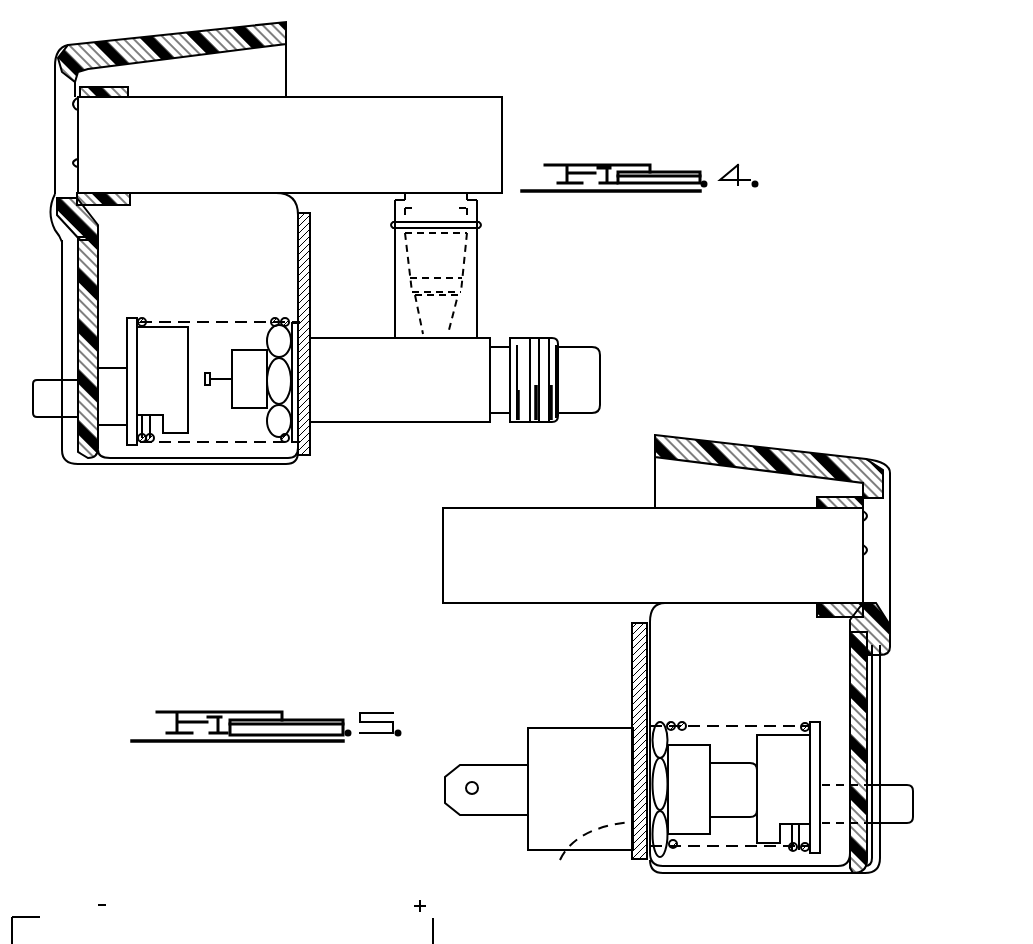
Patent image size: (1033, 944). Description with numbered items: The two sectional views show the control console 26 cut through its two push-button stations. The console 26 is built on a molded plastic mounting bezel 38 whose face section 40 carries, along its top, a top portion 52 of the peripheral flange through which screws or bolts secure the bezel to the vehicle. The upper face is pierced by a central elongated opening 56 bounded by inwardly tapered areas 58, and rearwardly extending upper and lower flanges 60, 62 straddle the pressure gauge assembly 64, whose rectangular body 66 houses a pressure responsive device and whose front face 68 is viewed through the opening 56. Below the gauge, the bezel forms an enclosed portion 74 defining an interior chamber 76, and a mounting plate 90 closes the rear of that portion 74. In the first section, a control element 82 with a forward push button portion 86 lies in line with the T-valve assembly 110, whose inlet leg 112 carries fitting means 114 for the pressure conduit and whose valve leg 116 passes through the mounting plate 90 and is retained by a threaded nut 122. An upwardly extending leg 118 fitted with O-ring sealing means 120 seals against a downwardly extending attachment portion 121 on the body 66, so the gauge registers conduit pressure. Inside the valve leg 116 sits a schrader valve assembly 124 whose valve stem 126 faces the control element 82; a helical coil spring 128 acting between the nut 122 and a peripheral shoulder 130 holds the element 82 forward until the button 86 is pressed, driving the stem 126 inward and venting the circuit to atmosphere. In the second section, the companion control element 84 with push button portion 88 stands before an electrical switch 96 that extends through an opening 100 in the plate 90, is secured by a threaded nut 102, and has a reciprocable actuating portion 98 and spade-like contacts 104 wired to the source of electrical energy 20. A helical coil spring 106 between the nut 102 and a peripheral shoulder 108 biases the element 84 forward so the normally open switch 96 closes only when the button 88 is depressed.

In FIG. 5, the source of electrical energy 20 is at (438, 932).
In FIG. 4, the control console 26 is at (402, 72).
In FIG. 5, the control console 26 is at (780, 434).
In FIG. 4, the mounting bezel 38 is at (70, 44).
In FIG. 5, the mounting bezel 38 is at (890, 462).
In FIG. 4, the face section 40 is at (76, 300).
In FIG. 5, the face section 40 is at (862, 684).
In FIG. 4, the top portion 52 is at (236, 48).
In FIG. 5, the top portion 52 is at (694, 436).
In FIG. 4, the central elongated opening 56 is at (82, 112).
In FIG. 5, the central elongated opening 56 is at (864, 517).
In FIG. 4, the inwardly tapered areas 58 is at (58, 210).
In FIG. 5, the inwardly tapered areas 58 is at (878, 617).
In FIG. 4, the upper flange 60 is at (122, 88).
In FIG. 5, the upper flange 60 is at (830, 500).
In FIG. 4, the lower flange 62 is at (130, 205).
In FIG. 5, the lower flange 62 is at (818, 612).
In FIG. 4, the pressure gauge assembly 64 is at (250, 198).
In FIG. 5, the pressure gauge assembly 64 is at (555, 506).
In FIG. 5, the body 66 is at (552, 605).
In FIG. 4, the front face 68 is at (80, 165).
In FIG. 5, the front face 68 is at (866, 553).
In FIG. 4, the enclosed portion 74 is at (218, 455).
In FIG. 4, the interior chamber 76 is at (222, 296).
In FIG. 5, the interior chamber 76 is at (796, 672).
In FIG. 4, the control element 82 is at (115, 434).
In FIG. 5, the control element 84 is at (835, 852).
In FIG. 4, the push button portion 86 is at (52, 405).
In FIG. 5, the push button portion 88 is at (890, 800).
In FIG. 4, the mounting plate 90 is at (306, 282).
In FIG. 5, the mounting plate 90 is at (634, 684).
In FIG. 5, the electrical switch 96 is at (612, 854).
In FIG. 5, the reciprocable actuating portion 98 is at (733, 812).
In FIG. 5, the opening 100 is at (570, 846).
In FIG. 5, the threaded nut 102 is at (672, 845).
In FIG. 5, the spade-like contacts 104 is at (496, 800).
In FIG. 5, the helical coil spring 106 is at (682, 722).
In FIG. 5, the peripheral shoulder 108 is at (815, 722).
In FIG. 4, the T-valve assembly 110 is at (418, 425).
In FIG. 4, the inlet leg 112 is at (532, 342).
In FIG. 4, the fitting means 114 is at (585, 367).
In FIG. 4, the valve leg 116 is at (328, 420).
In FIG. 4, the upwardly extending leg 118 is at (462, 320).
In FIG. 4, the O-ring sealing means 120 is at (470, 290).
In FIG. 4, the attachment portion 121 is at (428, 193).
In FIG. 4, the threaded nut 122 is at (282, 385).
In FIG. 4, the schrader valve assembly 124 is at (250, 402).
In FIG. 4, the valve stem 126 is at (216, 375).
In FIG. 4, the helical coil spring 128 is at (152, 440).
In FIG. 4, the peripheral shoulder 130 is at (135, 318).